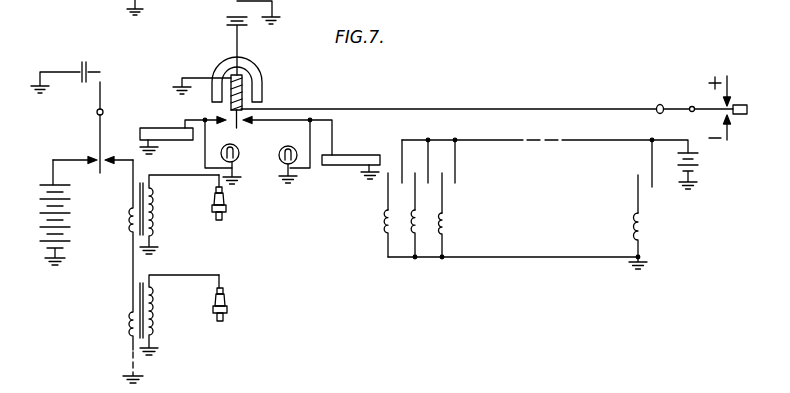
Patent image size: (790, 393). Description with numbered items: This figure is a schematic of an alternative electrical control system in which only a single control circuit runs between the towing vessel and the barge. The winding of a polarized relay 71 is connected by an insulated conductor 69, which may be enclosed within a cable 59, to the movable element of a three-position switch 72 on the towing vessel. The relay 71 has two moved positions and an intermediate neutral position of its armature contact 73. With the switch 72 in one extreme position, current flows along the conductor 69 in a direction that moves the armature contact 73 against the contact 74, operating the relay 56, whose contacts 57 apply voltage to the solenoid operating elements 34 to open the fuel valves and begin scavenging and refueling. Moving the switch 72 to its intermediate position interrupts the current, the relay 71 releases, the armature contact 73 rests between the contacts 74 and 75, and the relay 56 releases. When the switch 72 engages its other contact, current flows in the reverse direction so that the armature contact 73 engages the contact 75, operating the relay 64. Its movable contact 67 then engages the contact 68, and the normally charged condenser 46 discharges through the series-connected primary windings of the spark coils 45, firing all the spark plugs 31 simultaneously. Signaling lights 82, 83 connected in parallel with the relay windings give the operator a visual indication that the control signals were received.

The spark plug 31 is at (221, 220).
The solenoid operating element 34 is at (384, 224).
The spark coil 45 is at (137, 193).
The condenser 46 is at (87, 70).
The relay 56 is at (367, 155).
The contact 57 is at (389, 180).
The cable 59 is at (658, 104).
The relay 64 is at (155, 128).
The movable contact 67 is at (99, 133).
The contact 68 is at (114, 157).
The insulated conductor 69 is at (432, 109).
The relay 71 is at (255, 73).
The 3-position switch 72 is at (712, 98).
The armature contact 73 is at (227, 113).
The contact 74 is at (255, 122).
The contact 75 is at (216, 123).
The light 82 is at (281, 160).
The light 83 is at (239, 160).